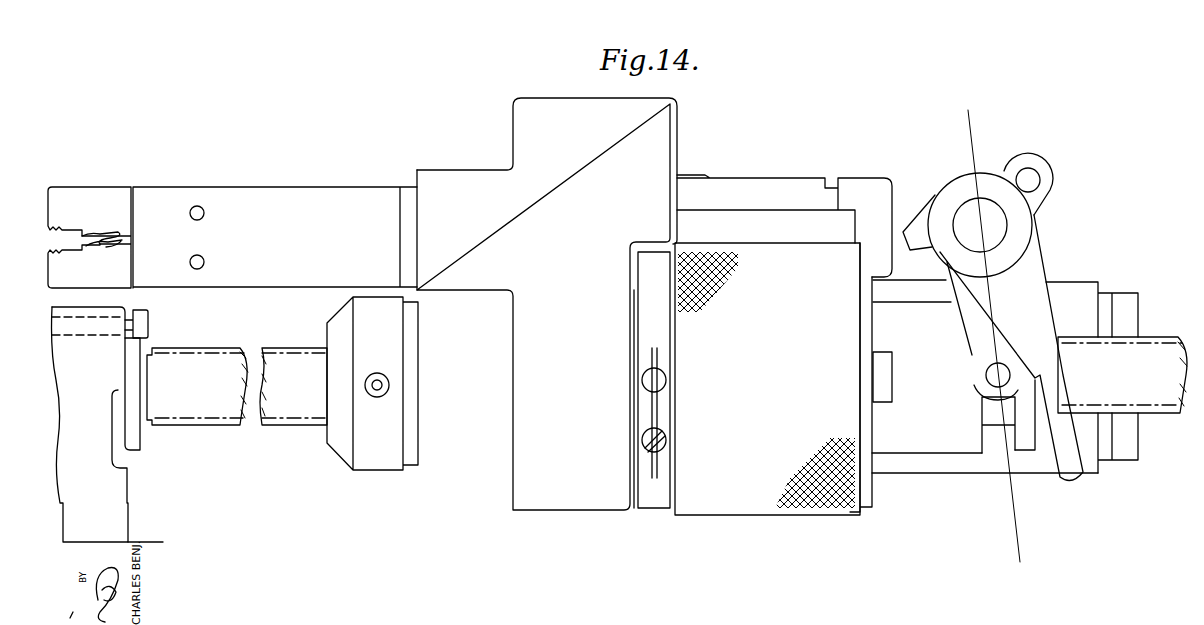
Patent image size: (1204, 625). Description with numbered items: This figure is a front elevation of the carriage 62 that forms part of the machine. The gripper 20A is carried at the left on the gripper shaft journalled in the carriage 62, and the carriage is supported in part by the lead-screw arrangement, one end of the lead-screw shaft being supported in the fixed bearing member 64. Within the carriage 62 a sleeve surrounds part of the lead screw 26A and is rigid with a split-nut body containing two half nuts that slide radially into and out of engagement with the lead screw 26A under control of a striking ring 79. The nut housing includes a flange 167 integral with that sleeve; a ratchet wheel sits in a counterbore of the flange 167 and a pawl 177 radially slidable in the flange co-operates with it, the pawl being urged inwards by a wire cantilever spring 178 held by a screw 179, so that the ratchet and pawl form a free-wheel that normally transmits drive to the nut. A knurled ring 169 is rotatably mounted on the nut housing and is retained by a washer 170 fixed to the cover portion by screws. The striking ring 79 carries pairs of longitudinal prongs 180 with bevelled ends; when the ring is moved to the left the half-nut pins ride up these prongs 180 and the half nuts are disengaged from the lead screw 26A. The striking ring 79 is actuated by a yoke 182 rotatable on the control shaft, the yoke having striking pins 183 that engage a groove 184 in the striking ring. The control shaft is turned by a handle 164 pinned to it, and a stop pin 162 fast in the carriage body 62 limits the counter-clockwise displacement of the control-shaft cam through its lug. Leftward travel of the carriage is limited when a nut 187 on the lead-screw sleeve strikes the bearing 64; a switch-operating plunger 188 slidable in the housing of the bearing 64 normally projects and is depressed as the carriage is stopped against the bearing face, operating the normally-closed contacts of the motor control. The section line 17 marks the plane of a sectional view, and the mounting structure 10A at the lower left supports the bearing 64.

The gripper 20A is at (112, 180).
The carriage 62 is at (517, 108).
The flange 167 is at (663, 508).
The pawl 177 is at (643, 378).
The wire cantilever spring 178 is at (652, 403).
The screw 179 is at (644, 444).
The knurled ring 169 is at (825, 507).
The washer 170 is at (870, 492).
The prongs 180 is at (880, 348).
The yoke 182 is at (972, 352).
The striking ring 79 is at (976, 455).
The groove 184 is at (1002, 462).
The striking pins 183 is at (982, 392).
The handle 164 is at (1073, 467).
The stop pin 162 is at (1040, 181).
The lead screw 26A is at (232, 352).
The nut 187 is at (380, 470).
The bracket 10A is at (155, 538).
The bearing member 64 is at (138, 434).
The switch-operating plunger 188 is at (147, 326).
The section line 17 is at (943, 119).